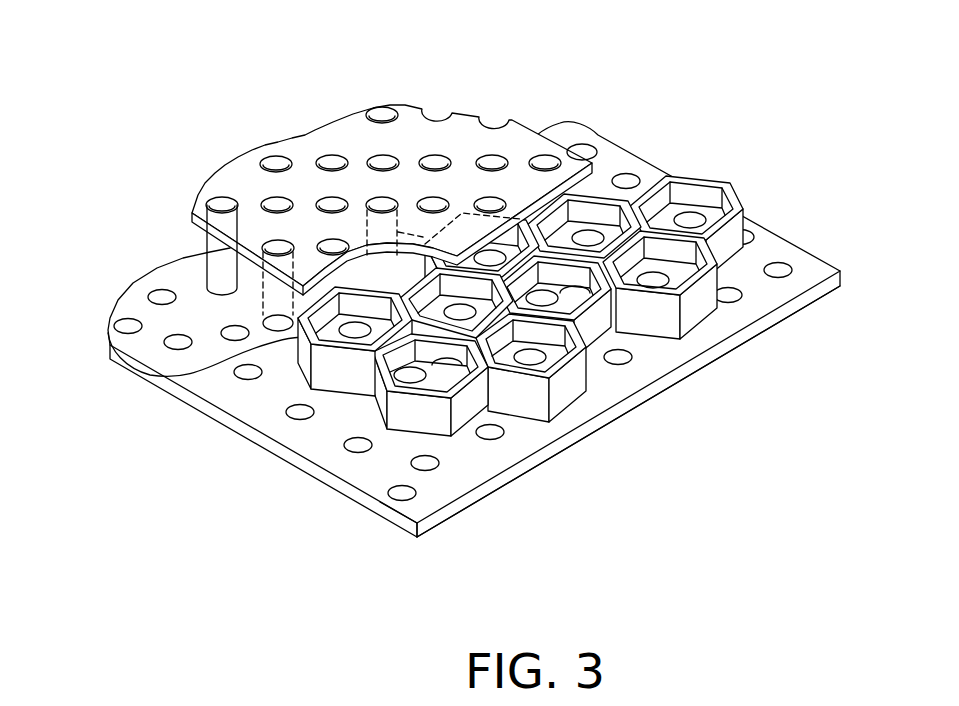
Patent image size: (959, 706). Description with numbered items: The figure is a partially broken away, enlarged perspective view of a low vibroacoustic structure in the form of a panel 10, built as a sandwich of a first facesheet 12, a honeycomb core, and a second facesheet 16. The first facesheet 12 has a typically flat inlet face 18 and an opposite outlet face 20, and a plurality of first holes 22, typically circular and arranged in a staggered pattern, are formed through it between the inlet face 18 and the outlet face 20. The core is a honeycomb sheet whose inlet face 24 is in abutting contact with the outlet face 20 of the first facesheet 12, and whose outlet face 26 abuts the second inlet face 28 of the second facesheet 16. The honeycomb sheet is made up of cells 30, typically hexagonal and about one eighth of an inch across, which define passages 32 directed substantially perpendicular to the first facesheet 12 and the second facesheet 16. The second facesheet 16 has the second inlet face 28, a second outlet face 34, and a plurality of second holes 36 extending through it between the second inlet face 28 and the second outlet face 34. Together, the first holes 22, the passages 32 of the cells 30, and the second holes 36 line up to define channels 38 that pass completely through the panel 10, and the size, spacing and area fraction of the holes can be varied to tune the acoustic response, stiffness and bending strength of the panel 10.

The panel 10 is at (735, 122).
The first facesheet 12 is at (517, 113).
The second facesheet 16 is at (392, 528).
The inlet face 18 is at (394, 171).
The outlet face 20 is at (200, 227).
The first holes 22 is at (275, 167).
The inlet face 24 is at (486, 315).
The outlet face 26 is at (577, 408).
The second inlet face 28 is at (518, 356).
The cells 30 is at (303, 367).
The passages 32 is at (147, 375).
The second outlet face 34 is at (737, 330).
The second holes 36 is at (490, 433).
The channels 38 is at (398, 232).